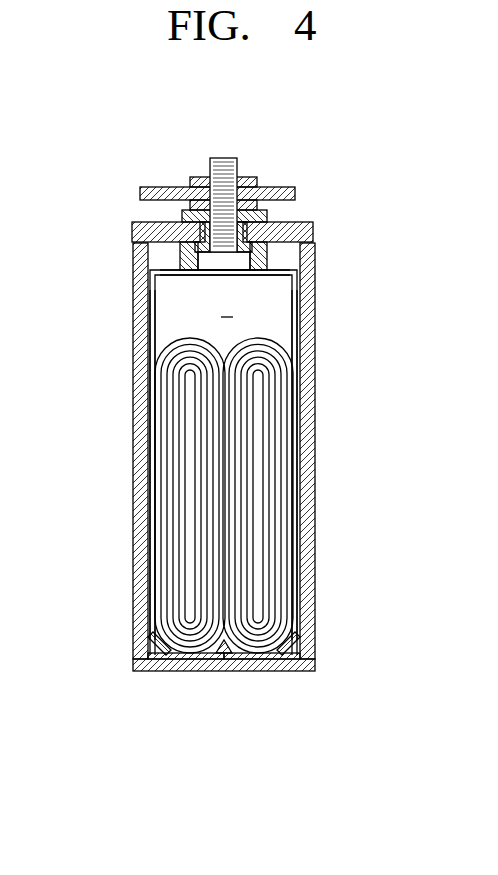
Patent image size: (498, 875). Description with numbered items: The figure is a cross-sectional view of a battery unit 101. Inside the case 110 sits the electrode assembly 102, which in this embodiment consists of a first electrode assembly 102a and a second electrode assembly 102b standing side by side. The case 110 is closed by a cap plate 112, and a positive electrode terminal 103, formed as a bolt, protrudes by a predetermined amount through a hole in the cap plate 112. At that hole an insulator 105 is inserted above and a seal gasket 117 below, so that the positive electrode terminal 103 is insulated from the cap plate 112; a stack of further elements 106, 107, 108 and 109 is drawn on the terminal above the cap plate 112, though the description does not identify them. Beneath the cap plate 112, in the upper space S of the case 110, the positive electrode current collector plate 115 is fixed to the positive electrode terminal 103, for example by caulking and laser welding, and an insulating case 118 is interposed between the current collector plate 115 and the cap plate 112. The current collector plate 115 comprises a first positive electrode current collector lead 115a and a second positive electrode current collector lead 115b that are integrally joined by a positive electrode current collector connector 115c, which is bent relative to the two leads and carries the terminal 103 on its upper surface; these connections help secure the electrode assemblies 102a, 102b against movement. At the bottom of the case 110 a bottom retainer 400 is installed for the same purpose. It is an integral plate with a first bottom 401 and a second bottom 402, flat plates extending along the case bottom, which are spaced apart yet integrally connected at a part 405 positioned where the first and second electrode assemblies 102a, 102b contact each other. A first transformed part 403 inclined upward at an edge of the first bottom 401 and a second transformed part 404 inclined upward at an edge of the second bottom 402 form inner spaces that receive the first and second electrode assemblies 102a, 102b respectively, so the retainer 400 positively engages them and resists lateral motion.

The battery unit 101 is at (165, 160).
The electrode assembly 102 is at (243, 595).
The first electrode assembly 102a is at (203, 658).
The second electrode assembly 102b is at (273, 658).
The positive electrode terminal 103 is at (222, 158).
The insulator 105 is at (252, 226).
The insulating plate 106 is at (268, 216).
The terminal plate 107 is at (262, 205).
The electrode tab plate 108 is at (290, 190).
The nut 109 is at (257, 180).
The case 110 is at (307, 433).
The cap plate 112 is at (303, 235).
The positive electrode current collector plate 115 is at (148, 316).
The first positive electrode current collector lead 115a is at (153, 346).
The second positive electrode current collector lead 115b is at (294, 347).
The positive electrode current collector connector 115c is at (253, 276).
The seal gasket 117 is at (192, 245).
The insulating case 118 is at (200, 260).
The bottom retainer 400 is at (232, 682).
The first bottom 401 is at (190, 657).
The second bottom 402 is at (260, 657).
The first transformed part 403 is at (152, 654).
The second transformed part 404 is at (298, 660).
The part 405 is at (232, 646).